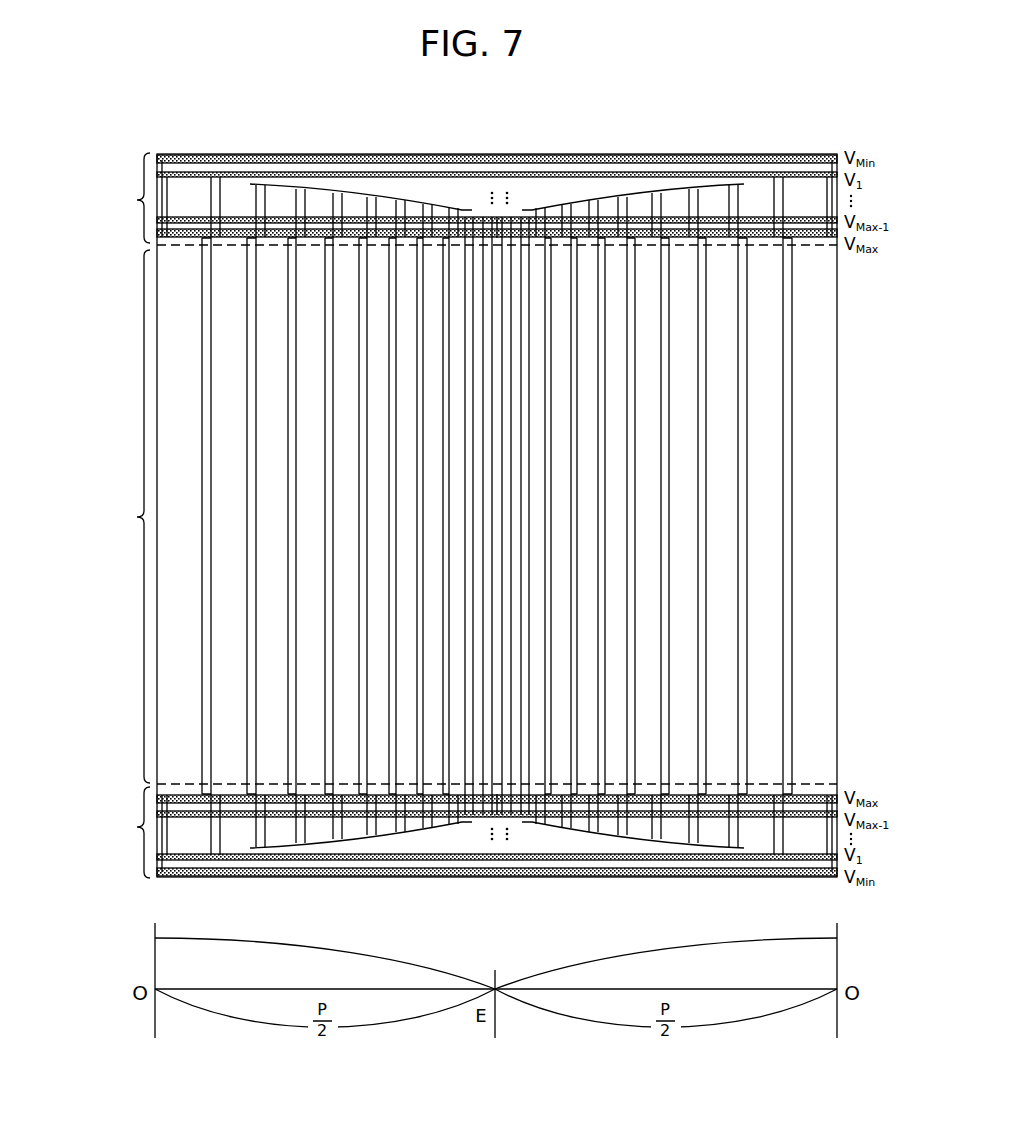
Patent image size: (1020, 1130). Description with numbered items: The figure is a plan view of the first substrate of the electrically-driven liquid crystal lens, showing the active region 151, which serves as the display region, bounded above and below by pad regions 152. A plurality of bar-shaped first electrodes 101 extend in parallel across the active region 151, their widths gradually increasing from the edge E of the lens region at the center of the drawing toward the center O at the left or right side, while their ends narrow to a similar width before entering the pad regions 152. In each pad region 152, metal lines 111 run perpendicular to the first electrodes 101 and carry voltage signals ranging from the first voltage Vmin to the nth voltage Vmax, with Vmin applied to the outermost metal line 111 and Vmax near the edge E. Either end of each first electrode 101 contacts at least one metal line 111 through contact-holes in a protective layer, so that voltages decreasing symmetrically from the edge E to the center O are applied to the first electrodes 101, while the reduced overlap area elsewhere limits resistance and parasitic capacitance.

The first electrode 101 is at (497, 775).
The metal line 111 is at (186, 155).
The active region 151 is at (411, 516).
The pad region 152 is at (435, 515).